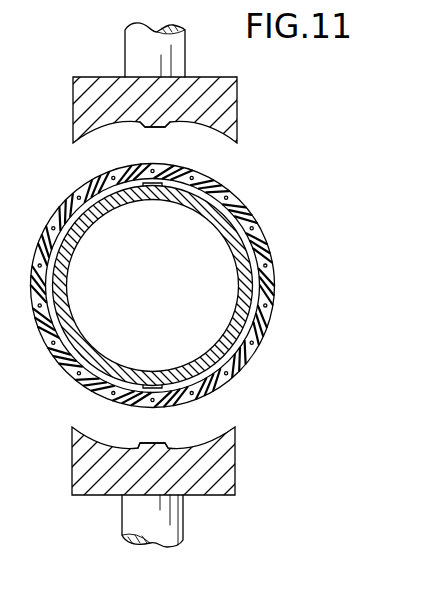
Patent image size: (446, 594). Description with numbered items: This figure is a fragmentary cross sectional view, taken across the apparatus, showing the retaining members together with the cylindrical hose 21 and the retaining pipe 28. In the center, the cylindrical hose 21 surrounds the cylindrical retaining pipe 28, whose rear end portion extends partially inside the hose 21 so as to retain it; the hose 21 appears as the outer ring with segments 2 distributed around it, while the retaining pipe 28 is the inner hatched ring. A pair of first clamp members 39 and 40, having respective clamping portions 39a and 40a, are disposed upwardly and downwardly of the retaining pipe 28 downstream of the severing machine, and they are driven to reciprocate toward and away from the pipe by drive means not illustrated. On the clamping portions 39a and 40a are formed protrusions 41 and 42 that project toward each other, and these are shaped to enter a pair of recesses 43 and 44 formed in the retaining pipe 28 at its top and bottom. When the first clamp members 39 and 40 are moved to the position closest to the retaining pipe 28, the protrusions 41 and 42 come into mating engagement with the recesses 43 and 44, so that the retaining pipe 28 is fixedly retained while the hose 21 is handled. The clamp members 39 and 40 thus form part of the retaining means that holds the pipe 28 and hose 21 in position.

The hatched segments of outer tube 2 is at (255, 221).
The cylindrical hose 21 is at (265, 255).
The retaining pipe 28 is at (240, 290).
The first clamp member 39 is at (268, 113).
The clamping portion 39a is at (96, 78).
The first clamp member 40 is at (250, 409).
The clamping portion 40a is at (235, 457).
The protrusion 41 is at (152, 125).
The protrusion 42 is at (155, 443).
The recess 43 is at (157, 192).
The recess 44 is at (155, 382).